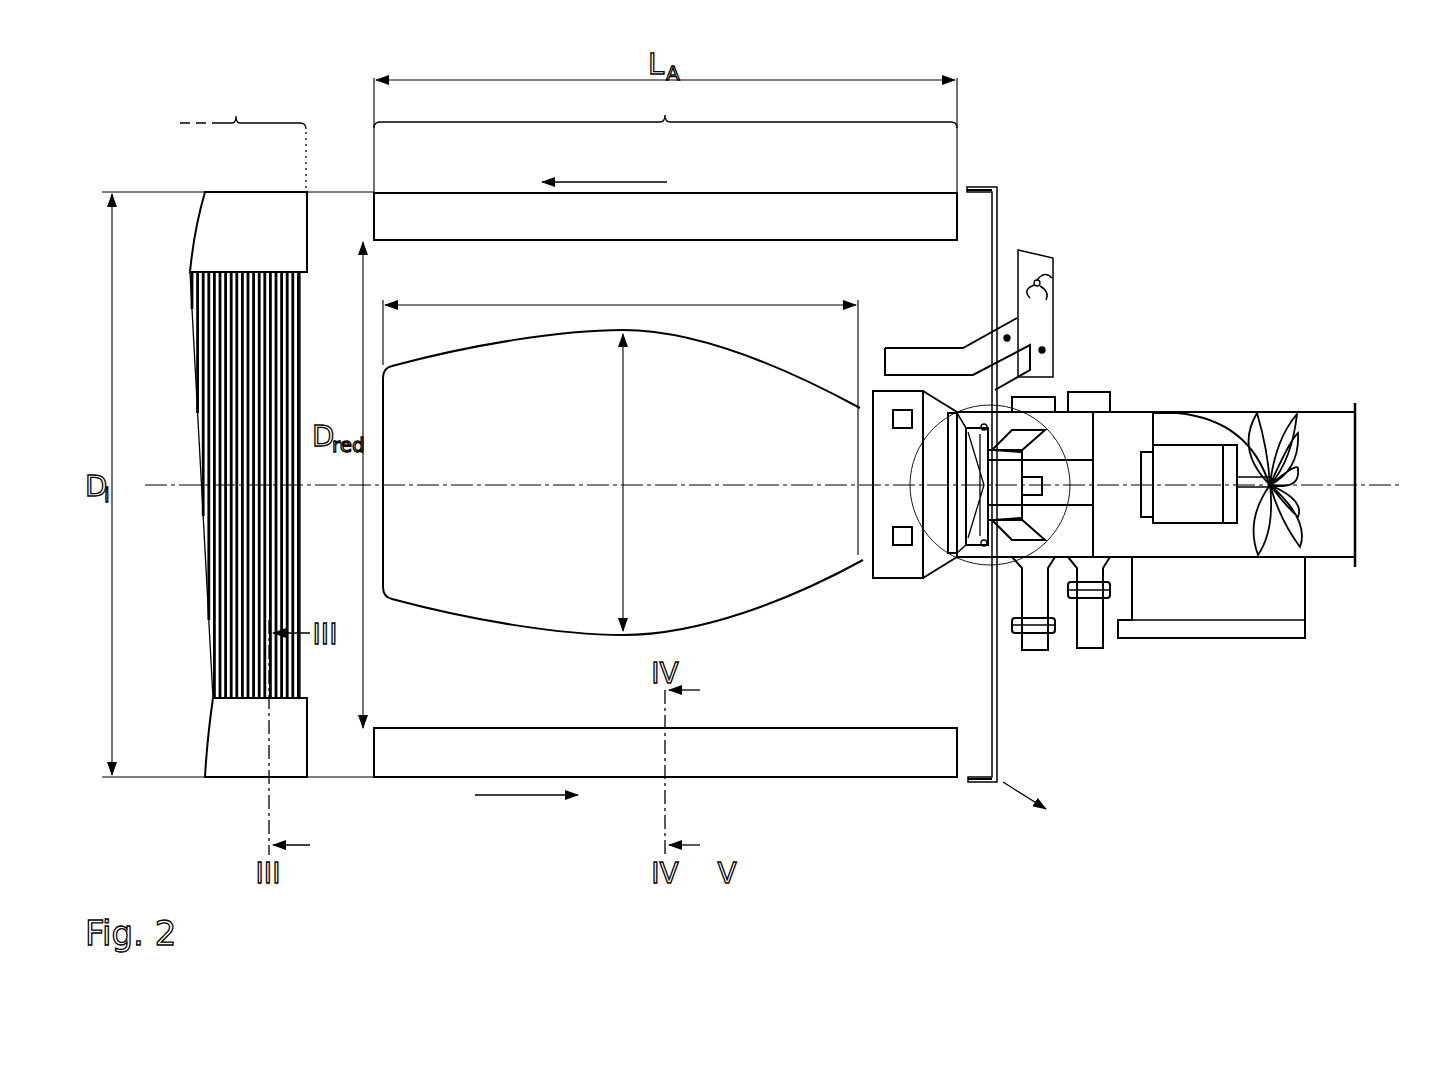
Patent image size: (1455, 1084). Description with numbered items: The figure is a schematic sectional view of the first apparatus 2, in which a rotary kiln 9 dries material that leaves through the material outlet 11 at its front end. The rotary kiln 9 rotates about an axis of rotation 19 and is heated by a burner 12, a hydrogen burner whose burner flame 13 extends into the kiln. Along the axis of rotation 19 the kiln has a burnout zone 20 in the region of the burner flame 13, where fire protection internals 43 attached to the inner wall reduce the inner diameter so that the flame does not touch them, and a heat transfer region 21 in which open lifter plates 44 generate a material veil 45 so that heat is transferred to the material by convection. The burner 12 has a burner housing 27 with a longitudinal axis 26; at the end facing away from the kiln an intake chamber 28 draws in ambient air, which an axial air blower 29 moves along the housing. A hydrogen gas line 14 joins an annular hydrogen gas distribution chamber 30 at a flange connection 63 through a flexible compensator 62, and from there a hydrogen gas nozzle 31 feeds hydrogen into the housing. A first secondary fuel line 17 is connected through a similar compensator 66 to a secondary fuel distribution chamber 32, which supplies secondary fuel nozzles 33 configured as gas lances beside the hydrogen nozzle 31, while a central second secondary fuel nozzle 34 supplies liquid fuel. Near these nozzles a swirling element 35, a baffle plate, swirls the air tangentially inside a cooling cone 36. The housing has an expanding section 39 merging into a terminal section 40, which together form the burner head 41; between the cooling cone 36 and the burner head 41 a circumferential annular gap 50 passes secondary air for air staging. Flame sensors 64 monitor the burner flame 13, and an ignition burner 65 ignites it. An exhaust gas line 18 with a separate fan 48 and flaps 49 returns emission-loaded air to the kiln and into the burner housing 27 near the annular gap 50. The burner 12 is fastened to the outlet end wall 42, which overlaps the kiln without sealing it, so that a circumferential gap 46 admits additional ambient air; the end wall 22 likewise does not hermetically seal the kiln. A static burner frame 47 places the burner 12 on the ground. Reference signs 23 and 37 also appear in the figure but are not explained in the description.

The first apparatus 2 is at (1074, 124).
The rotary kiln 9 is at (768, 189).
The material outlet 11 is at (1003, 782).
The burner 12 is at (1373, 356).
The burner flame 13 is at (501, 445).
The hydrogen gas line 14 is at (975, 553).
The first secondary fuel line 17 is at (985, 560).
The exhaust gas line 18 is at (1058, 265).
The axis of rotation 19 is at (150, 470).
The burnout zone 20 is at (665, 107).
The heat transfer region 21 is at (243, 138).
The end wall 22 is at (535, 797).
The flow direction 23 is at (595, 181).
The longitudinal axis 26 is at (1370, 482).
The burner housing 27 is at (1241, 407).
The intake chamber 28 is at (1306, 463).
The air blower 29 is at (1281, 433).
The hydrogen gas distribution chamber 30 is at (1110, 395).
The hydrogen gas nozzle 31 is at (992, 450).
The secondary fuel distribution chamber 32 is at (988, 428).
The secondary fuel nozzles 33 is at (872, 578).
The second secondary fuel nozzle 34 is at (1037, 488).
The swirling element 35 is at (1040, 650).
The cooling cone 36 is at (955, 568).
The mounting foot 37 is at (1090, 648).
The expanding section 39 is at (950, 410).
The terminal section 40 is at (900, 410).
The burner head 41 is at (912, 592).
The end wall 42 is at (997, 218).
The fire protection internals 43 is at (656, 233).
The lifter plates 44 is at (228, 243).
The material veil 45 is at (273, 300).
The circumferential gap 46 is at (968, 782).
The burner frame 47 is at (1258, 632).
The fan 48 is at (1007, 338).
The flaps 49 is at (1042, 350).
The annular gap 50 is at (962, 405).
The compensator 62 is at (1050, 556).
The flange connection 63 is at (1047, 612).
The flame sensor 64 is at (902, 420).
The ignition burner 65 is at (902, 537).
The compensator 66 is at (1130, 562).